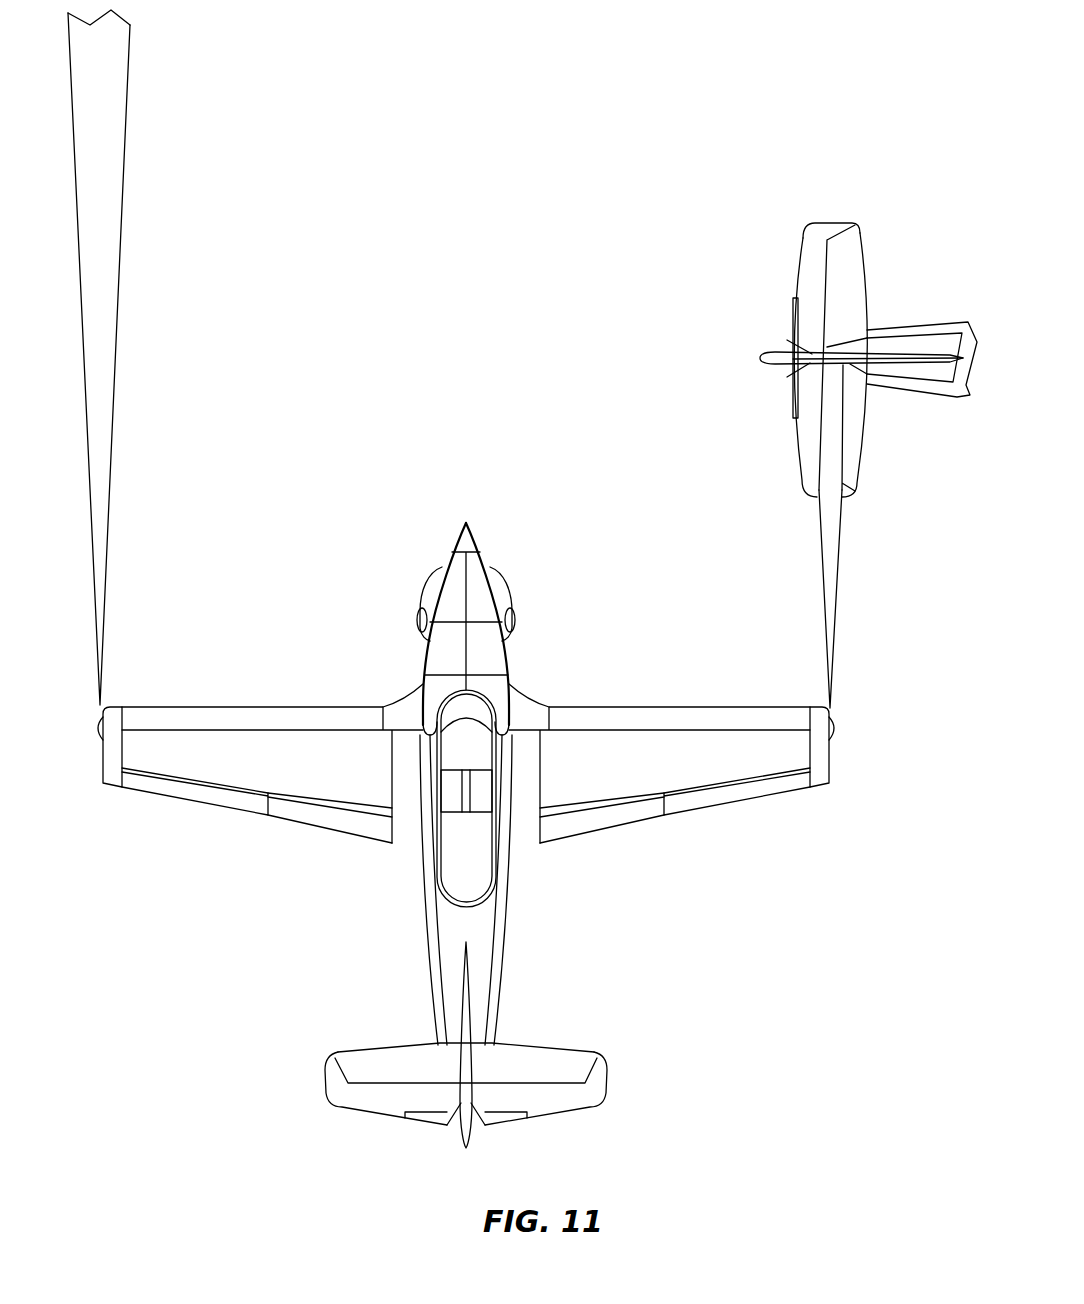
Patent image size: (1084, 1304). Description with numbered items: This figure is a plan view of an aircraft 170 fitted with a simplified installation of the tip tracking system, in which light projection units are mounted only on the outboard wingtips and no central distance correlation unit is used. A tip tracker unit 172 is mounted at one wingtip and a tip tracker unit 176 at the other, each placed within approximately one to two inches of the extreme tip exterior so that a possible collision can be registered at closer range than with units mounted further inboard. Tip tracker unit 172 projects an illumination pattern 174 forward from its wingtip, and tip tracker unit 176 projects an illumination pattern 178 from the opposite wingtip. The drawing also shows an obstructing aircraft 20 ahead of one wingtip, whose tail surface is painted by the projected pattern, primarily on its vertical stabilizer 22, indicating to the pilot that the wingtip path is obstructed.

The obstructing aircraft 20 is at (896, 258).
The vertical stabilizer 22 is at (772, 353).
The aircraft 170 is at (527, 422).
The tip tracker unit 172 is at (835, 725).
The illumination pattern 174 is at (832, 570).
The tip tracker unit 176 is at (97, 735).
The illumination pattern 178 is at (102, 565).